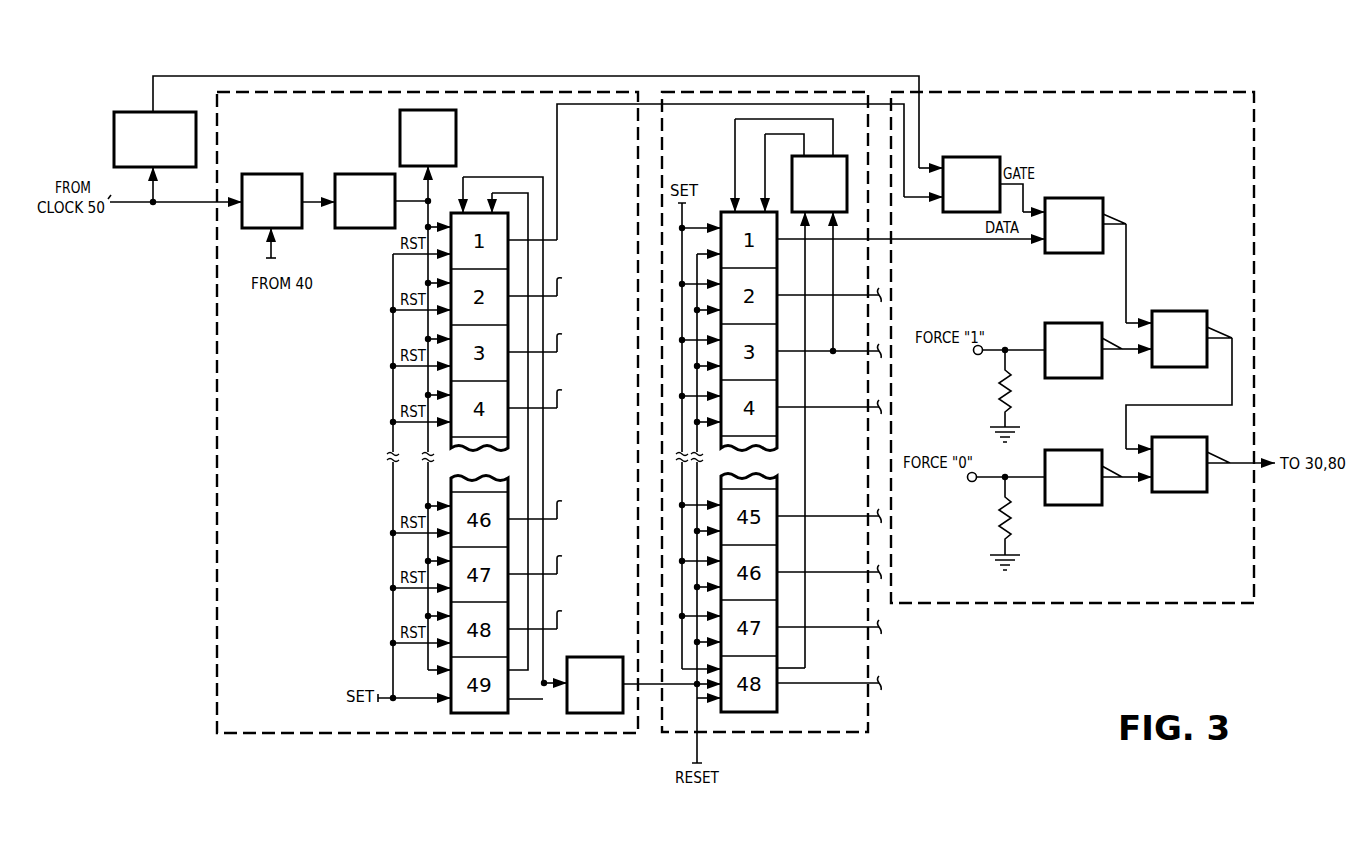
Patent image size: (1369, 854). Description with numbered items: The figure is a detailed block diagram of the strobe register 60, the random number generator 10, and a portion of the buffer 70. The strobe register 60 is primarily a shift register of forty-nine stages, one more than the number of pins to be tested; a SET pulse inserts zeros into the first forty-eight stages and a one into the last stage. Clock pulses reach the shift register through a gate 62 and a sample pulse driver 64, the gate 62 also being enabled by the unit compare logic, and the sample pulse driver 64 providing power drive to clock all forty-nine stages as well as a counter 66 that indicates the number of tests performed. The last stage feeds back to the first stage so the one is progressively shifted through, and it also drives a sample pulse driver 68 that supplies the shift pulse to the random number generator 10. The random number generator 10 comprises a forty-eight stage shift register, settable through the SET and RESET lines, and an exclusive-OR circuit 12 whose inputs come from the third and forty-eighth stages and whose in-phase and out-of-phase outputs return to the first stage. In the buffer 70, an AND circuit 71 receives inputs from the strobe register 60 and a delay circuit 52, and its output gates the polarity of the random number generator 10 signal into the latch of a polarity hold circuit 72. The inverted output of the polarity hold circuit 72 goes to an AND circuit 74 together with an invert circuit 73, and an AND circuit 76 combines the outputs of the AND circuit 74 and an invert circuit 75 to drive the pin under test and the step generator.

The random number generator 10 is at (872, 722).
The exclusive-OR circuit 12 is at (795, 168).
The delay circuit 52 is at (112, 126).
The strobe register 60 is at (212, 538).
The gate 62 is at (283, 172).
The sample pulse driver 64 is at (350, 172).
The counter 66 is at (452, 153).
The sample pulse driver 68 is at (598, 655).
The buffer 70 is at (1108, 607).
The AND circuit 71 is at (963, 157).
The polarity hold circuit 72 is at (1080, 196).
The invert circuit 73 is at (1077, 322).
The AND circuit 74 is at (1183, 310).
The invert circuit 75 is at (1077, 448).
The AND circuit 76 is at (1190, 492).